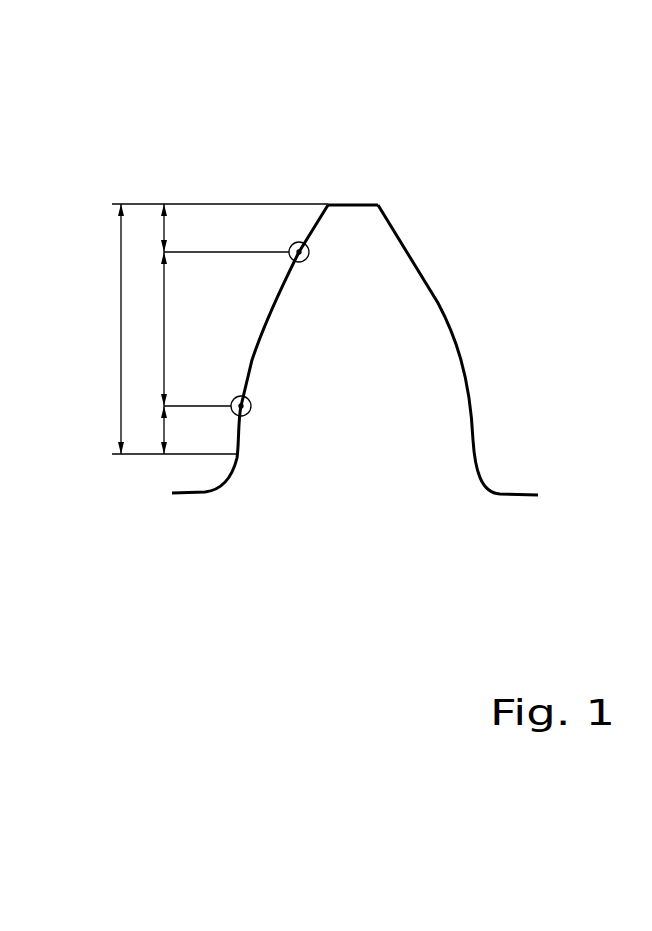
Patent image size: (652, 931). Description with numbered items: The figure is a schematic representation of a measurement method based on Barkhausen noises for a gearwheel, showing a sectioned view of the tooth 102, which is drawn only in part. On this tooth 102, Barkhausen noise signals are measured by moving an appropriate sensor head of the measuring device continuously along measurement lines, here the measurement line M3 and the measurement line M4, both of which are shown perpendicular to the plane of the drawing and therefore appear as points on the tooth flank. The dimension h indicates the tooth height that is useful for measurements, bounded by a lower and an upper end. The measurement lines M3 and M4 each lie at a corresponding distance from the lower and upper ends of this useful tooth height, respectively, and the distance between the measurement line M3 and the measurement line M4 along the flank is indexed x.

The tooth 102 is at (377, 203).
The measurement line M3 is at (248, 414).
The measurement line M4 is at (292, 242).
The tooth height h is at (120, 330).
The distance between measurement lines x is at (167, 328).